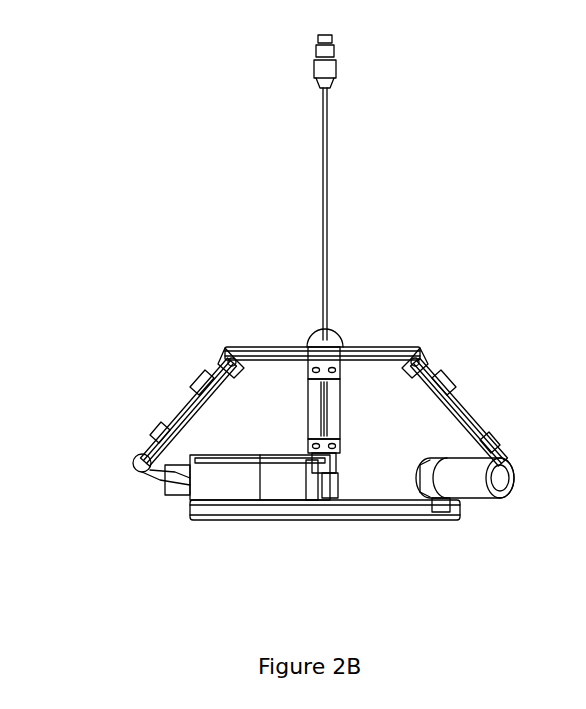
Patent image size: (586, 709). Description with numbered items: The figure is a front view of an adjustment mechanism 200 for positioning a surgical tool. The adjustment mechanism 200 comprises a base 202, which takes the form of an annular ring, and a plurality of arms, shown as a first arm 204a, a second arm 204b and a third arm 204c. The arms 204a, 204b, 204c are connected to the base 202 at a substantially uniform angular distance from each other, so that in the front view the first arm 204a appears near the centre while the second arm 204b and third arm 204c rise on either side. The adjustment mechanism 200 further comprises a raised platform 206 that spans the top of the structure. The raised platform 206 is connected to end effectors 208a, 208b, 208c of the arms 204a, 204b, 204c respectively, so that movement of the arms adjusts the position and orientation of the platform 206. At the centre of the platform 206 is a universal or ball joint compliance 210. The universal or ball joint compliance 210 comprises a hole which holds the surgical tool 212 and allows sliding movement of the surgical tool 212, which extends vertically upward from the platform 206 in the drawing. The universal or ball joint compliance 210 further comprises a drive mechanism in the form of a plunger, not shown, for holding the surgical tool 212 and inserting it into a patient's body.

The adjustment mechanism 200 is at (114, 519).
The base 202 is at (397, 520).
The first arm 204a is at (313, 432).
The second arm 204b is at (172, 420).
The third arm 204c is at (456, 409).
The raised platform 206 is at (378, 348).
The end effector 208a is at (340, 366).
The end effector 208b is at (230, 362).
The end effector 208c is at (432, 357).
The universal or ball joint compliance 210 is at (317, 331).
The surgical tool 212 is at (328, 180).